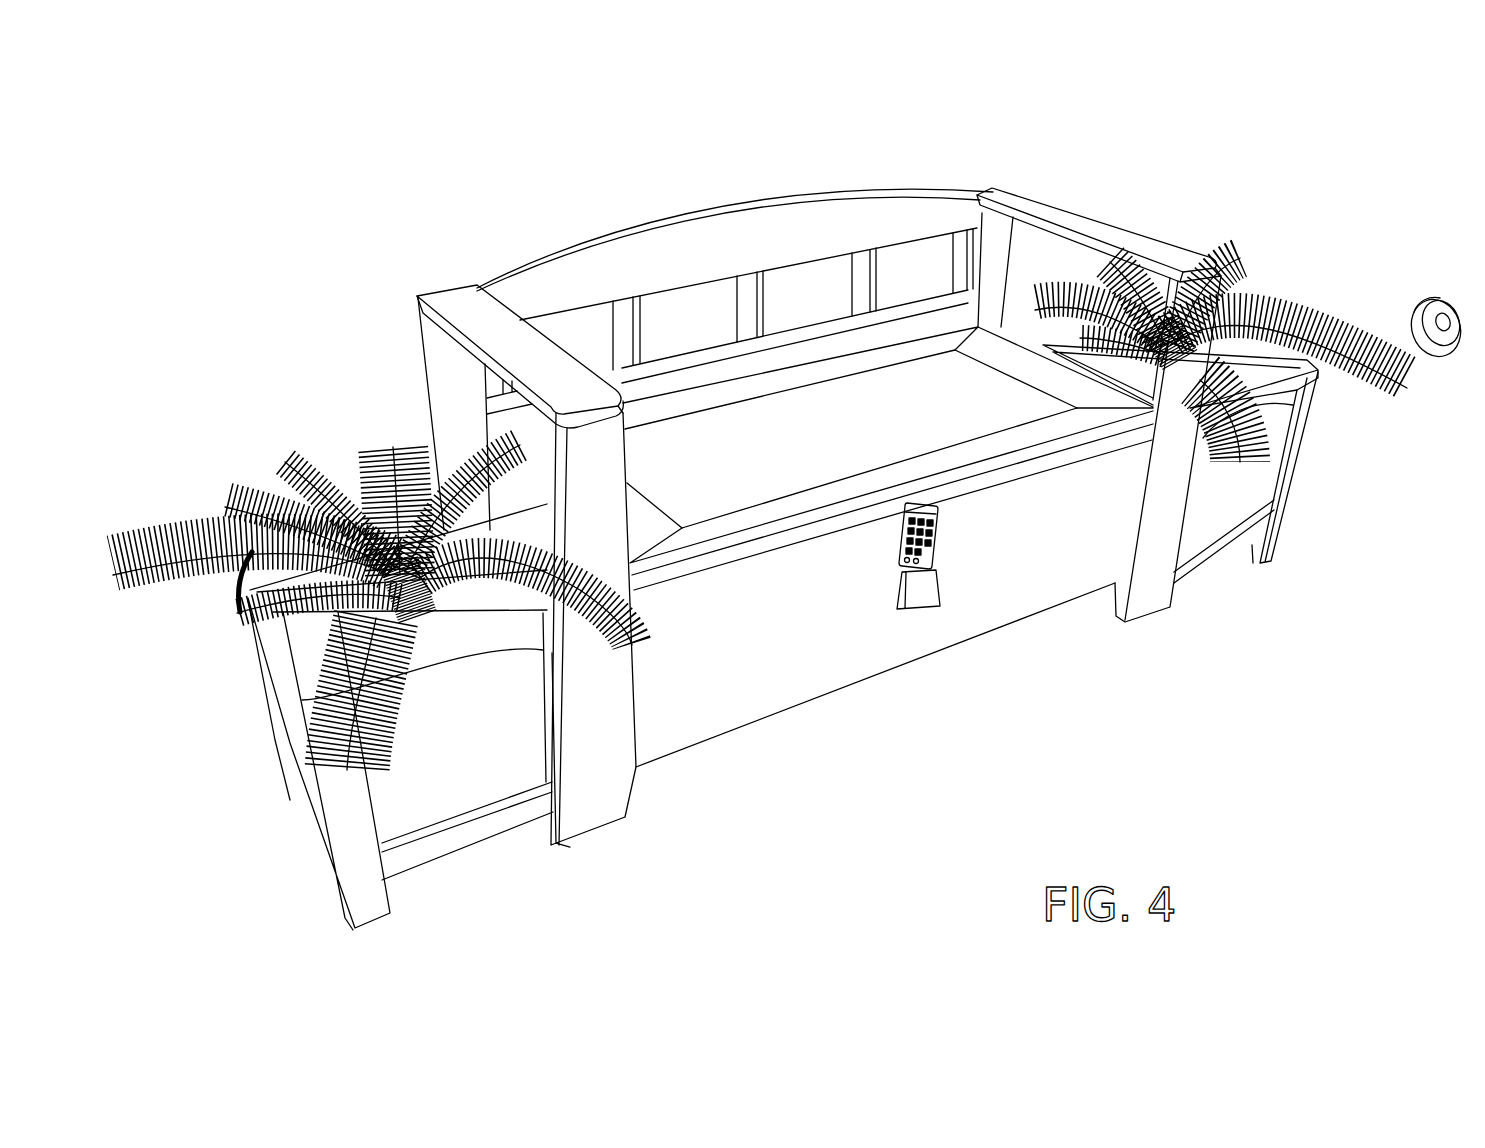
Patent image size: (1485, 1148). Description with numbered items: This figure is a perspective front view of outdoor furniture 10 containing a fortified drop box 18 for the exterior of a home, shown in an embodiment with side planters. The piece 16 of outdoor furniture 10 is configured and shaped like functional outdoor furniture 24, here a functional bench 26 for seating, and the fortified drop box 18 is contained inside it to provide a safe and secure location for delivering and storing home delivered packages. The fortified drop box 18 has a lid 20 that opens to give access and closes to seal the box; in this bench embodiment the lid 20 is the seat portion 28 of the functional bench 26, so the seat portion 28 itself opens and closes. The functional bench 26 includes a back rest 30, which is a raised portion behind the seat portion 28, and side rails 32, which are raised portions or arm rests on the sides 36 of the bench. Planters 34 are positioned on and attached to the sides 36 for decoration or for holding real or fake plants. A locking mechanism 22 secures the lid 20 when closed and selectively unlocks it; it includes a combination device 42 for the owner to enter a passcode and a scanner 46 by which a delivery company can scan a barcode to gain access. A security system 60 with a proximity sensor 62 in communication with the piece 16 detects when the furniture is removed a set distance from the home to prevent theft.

The outdoor furniture 10 is at (908, 126).
The piece of outdoor furniture 16 is at (803, 144).
The fortified drop box 18 is at (695, 690).
The lid 20 is at (738, 542).
The locking mechanism 22 is at (885, 562).
The functional outdoor furniture 24 is at (1009, 143).
The functional bench 26 is at (1099, 235).
The seat portion 28 is at (855, 443).
The back rest 30 is at (705, 243).
The side rails 32 is at (474, 300).
The planters 34 is at (1356, 428).
The sides 36 is at (1130, 207).
The combination device 42 is at (940, 528).
The scanner 46 is at (943, 586).
The security system 60 is at (1308, 194).
The proximity sensor 62 is at (1434, 300).